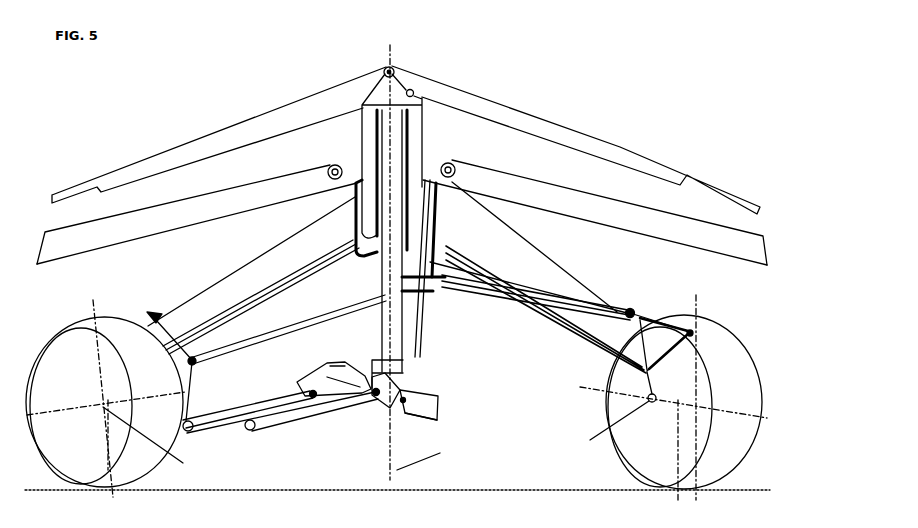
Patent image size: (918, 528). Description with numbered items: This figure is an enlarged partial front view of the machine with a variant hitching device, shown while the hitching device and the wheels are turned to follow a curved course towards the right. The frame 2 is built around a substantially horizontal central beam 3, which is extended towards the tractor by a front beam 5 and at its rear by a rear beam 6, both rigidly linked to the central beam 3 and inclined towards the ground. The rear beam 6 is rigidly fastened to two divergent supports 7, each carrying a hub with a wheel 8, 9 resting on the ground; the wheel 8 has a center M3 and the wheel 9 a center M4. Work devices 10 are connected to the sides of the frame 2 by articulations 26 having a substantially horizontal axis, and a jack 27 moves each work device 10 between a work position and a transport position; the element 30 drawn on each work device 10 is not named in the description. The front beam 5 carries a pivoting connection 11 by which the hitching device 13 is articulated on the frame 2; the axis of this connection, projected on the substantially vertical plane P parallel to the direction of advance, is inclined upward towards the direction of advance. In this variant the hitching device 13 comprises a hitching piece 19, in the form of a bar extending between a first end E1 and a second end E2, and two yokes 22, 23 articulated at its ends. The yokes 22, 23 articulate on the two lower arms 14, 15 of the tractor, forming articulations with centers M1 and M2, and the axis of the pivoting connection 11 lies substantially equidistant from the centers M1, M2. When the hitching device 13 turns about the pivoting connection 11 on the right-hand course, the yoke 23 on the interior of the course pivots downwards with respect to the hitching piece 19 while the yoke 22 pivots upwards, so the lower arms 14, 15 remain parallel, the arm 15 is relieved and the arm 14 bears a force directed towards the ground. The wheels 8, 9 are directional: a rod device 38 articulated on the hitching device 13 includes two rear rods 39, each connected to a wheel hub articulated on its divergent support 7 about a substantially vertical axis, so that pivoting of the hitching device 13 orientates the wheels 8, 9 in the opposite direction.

The frame 2 is at (360, 110).
The central beam 3 is at (350, 158).
The front beam 5 is at (382, 268).
The rear beam 6 is at (363, 208).
The divergent support 7 is at (220, 292).
The wheel 8 is at (717, 337).
The wheel 9 is at (122, 335).
The work device 10 is at (168, 193).
The pivoting connection 11 is at (408, 352).
The hitching device 13 is at (433, 420).
The lower arm 14 is at (293, 417).
The lower arm 15 is at (233, 410).
The hitching piece 19 is at (427, 398).
The yoke 22 is at (382, 402).
The yoke 23 is at (302, 385).
The articulation 26 is at (330, 167).
The jack 27 is at (240, 127).
The wing flap 30 is at (253, 182).
The rod device 38 is at (425, 305).
The rear rod 39 is at (292, 327).
The first end E1 is at (423, 407).
The second end E2 is at (343, 367).
The center M1 is at (368, 400).
The center M2 is at (303, 387).
The center M3 is at (605, 424).
The center M4 is at (154, 443).
The plane P is at (423, 457).